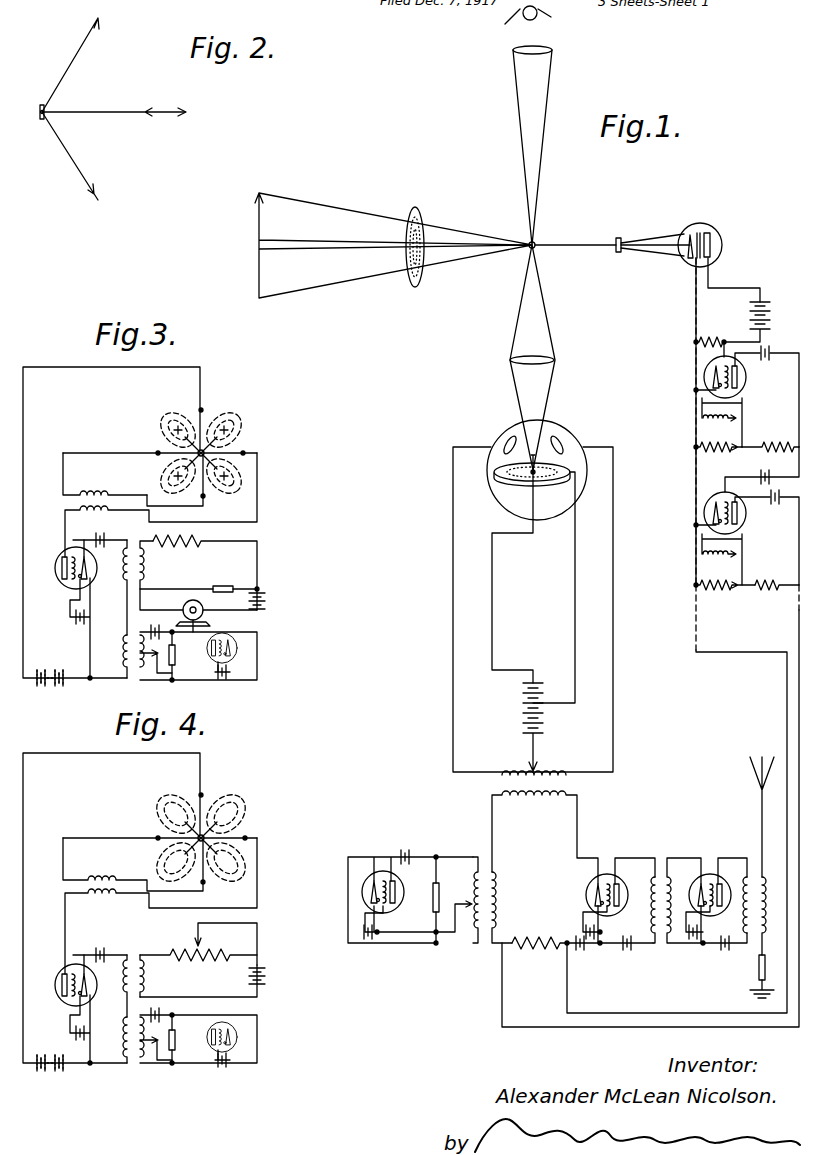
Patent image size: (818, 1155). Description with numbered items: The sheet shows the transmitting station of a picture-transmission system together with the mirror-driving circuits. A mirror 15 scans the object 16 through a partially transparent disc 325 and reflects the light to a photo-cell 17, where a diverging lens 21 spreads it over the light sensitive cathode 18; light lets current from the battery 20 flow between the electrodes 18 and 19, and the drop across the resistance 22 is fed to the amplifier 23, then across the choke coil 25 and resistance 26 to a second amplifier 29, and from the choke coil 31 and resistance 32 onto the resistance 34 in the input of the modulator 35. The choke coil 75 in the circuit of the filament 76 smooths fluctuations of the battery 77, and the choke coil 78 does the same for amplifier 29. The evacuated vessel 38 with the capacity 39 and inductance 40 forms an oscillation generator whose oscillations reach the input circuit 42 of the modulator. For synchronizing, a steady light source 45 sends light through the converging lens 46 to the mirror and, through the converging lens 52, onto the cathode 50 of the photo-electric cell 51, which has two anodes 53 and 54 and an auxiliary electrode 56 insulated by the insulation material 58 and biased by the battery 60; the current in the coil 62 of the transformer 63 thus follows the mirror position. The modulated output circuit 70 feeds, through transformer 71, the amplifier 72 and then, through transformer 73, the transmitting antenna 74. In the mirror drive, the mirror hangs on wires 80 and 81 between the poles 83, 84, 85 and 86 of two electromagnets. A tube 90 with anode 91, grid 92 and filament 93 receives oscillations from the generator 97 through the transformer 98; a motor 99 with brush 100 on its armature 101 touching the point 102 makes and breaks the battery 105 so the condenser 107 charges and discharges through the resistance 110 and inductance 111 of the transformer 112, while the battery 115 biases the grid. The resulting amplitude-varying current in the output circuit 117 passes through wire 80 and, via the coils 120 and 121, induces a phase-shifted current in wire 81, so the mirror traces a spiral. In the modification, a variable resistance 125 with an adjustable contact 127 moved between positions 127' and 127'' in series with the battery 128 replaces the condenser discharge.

In FIG. 2, the mirror 15 is at (40, 116).
In FIG. 1, the mirror 15 is at (537, 243).
In FIG. 3, the mirror 15 is at (208, 451).
In FIG. 4, the mirror 15 is at (208, 836).
In FIG. 2, the object 16 is at (82, 164).
In FIG. 1, the object 16 is at (258, 236).
In FIG. 2, the photo-cell 17 is at (83, 59).
In FIG. 1, the photo-cell 17 is at (722, 241).
In FIG. 1, the light sensitive cathode 18 is at (712, 235).
In FIG. 1, the electrode 19 is at (694, 233).
In FIG. 1, the battery 20 is at (770, 313).
In FIG. 1, the diverging lens 21 is at (618, 238).
In FIG. 1, the resistance 22 is at (696, 340).
In FIG. 1, the amplifier 23 is at (713, 370).
In FIG. 1, the choke coil 25 is at (718, 452).
In FIG. 1, the resistance 26 is at (783, 446).
In FIG. 1, the second amplifier 29 is at (713, 508).
In FIG. 1, the choke coil 31 is at (717, 589).
In FIG. 1, the resistance 32 is at (771, 590).
In FIG. 1, the resistance 34 is at (540, 948).
In FIG. 1, the modulator 35 is at (609, 871).
In FIG. 1, the evacuated vessel 38 is at (386, 872).
In FIG. 1, the capacity 39 is at (432, 906).
In FIG. 1, the inductance 40 is at (471, 889).
In FIG. 1, the input circuit 42 is at (517, 907).
In FIG. 2, the source of steady light 45 is at (147, 116).
In FIG. 1, the source of steady light 45 is at (542, 14).
In FIG. 1, the converging lens 46 is at (550, 52).
In FIG. 1, the light sensitive cathode 50 is at (568, 473).
In FIG. 2, the photo-electric cell 51 is at (184, 115).
In FIG. 1, the photo-electric cell 51 is at (560, 432).
In FIG. 1, the converging lens 52 is at (556, 360).
In FIG. 1, the anode 53 is at (506, 437).
In FIG. 1, the anode 54 is at (568, 442).
In FIG. 1, the auxiliary electrode 56 is at (495, 479).
In FIG. 1, the insulation material 58 is at (527, 477).
In FIG. 1, the battery 60 is at (522, 712).
In FIG. 1, the coil 62 is at (548, 774).
In FIG. 1, the transformer 63 is at (568, 795).
In FIG. 1, the output circuit 70 is at (653, 904).
In FIG. 1, the transformer 71 is at (663, 875).
In FIG. 1, the amplifier 72 is at (711, 871).
In FIG. 1, the transformer 73 is at (748, 875).
In FIG. 1, the transmitting antenna 74 is at (760, 796).
In FIG. 1, the choke coil 75 is at (728, 423).
In FIG. 1, the filament 76 is at (712, 384).
In FIG. 1, the battery 77 is at (738, 414).
In FIG. 1, the choke coil 78 is at (732, 561).
In FIG. 3, the wire 80 is at (202, 418).
In FIG. 4, the wire 80 is at (202, 803).
In FIG. 3, the wire 81 is at (165, 466).
In FIG. 4, the wire 81 is at (163, 838).
In FIG. 3, the pole 83 is at (223, 429).
In FIG. 3, the pole 84 is at (198, 497).
In FIG. 3, the pole 85 is at (229, 488).
In FIG. 3, the pole 86 is at (166, 437).
In FIG. 3, the evacuated vessel 90 is at (71, 590).
In FIG. 4, the evacuated vessel 90 is at (87, 1003).
In FIG. 3, the anode 91 is at (63, 581).
In FIG. 4, the anode 91 is at (63, 996).
In FIG. 3, the grid 92 is at (90, 559).
In FIG. 4, the grid 92 is at (73, 970).
In FIG. 3, the filament 93 is at (88, 580).
In FIG. 4, the filament 93 is at (89, 983).
In FIG. 3, the high-frequency oscillation generator 97 is at (238, 649).
In FIG. 4, the high-frequency oscillation generator 97 is at (238, 1037).
In FIG. 3, the transformer 98 is at (126, 654).
In FIG. 4, the transformer 98 is at (136, 1058).
In FIG. 3, the motor 99 is at (176, 646).
In FIG. 3, the brush 100 is at (205, 607).
In FIG. 3, the armature 101 is at (183, 609).
In FIG. 3, the point 102 is at (205, 618).
In FIG. 3, the battery 105 is at (262, 598).
In FIG. 3, the condenser 107 is at (228, 583).
In FIG. 3, the resistance 110 is at (184, 548).
In FIG. 3, the inductance 111 is at (143, 570).
In FIG. 4, the inductance 111 is at (144, 976).
In FIG. 3, the transformer 112 is at (143, 578).
In FIG. 4, the transformer 112 is at (138, 958).
In FIG. 3, the battery 115 is at (108, 538).
In FIG. 4, the battery 115 is at (104, 948).
In FIG. 3, the output circuit 117 is at (45, 605).
In FIG. 4, the output circuit 117 is at (45, 1006).
In FIG. 3, the coil 120 is at (105, 474).
In FIG. 3, the coil 121 is at (159, 505).
In FIG. 4, the variable resistance 125 is at (210, 962).
In FIG. 4, the adjustable contact 127 is at (218, 934).
In FIG. 4, the position 127' is at (254, 927).
In FIG. 4, the position 127'' is at (161, 931).
In FIG. 4, the battery 128 is at (260, 971).
In FIG. 1, the partially transparent disc 325 is at (423, 225).